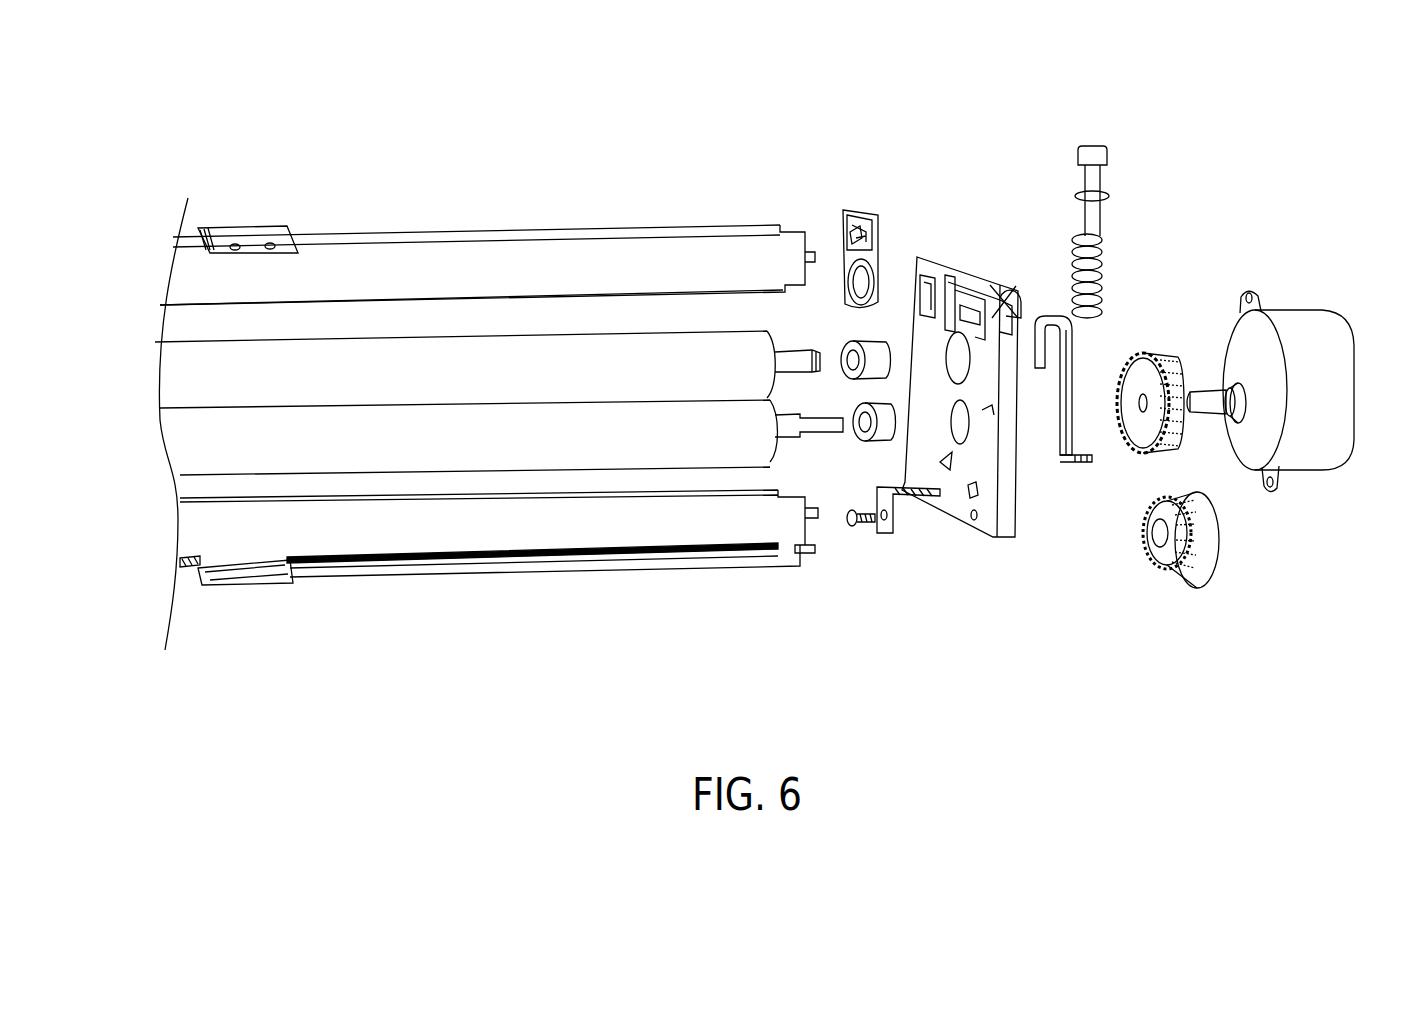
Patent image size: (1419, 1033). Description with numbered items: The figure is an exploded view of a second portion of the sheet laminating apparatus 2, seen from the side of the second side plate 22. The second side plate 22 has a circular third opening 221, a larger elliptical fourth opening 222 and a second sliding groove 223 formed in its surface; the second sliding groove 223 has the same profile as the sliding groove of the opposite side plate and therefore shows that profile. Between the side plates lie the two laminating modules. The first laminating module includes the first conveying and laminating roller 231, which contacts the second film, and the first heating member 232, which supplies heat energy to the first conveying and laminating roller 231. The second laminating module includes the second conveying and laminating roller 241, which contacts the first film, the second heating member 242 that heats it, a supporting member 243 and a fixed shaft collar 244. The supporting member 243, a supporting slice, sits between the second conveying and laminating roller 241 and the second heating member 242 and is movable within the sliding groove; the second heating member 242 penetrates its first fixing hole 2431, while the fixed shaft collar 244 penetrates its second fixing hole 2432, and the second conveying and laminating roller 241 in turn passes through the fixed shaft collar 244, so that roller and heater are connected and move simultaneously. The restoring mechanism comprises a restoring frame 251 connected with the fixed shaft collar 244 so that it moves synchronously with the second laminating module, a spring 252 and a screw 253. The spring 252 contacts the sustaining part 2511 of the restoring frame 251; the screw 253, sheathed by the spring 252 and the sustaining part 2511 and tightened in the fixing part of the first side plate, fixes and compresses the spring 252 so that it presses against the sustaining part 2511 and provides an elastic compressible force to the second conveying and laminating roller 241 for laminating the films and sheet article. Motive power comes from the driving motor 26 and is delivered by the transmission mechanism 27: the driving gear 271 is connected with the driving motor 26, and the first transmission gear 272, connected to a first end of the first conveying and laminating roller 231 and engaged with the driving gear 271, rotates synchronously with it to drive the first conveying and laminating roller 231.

The sheet laminating apparatus 2 is at (1306, 97).
The second side plate 22 is at (929, 275).
The third opening 221 is at (962, 440).
The fourth opening 222 is at (1014, 304).
The second sliding groove 223 is at (965, 292).
The first conveying and laminating roller 231 is at (478, 440).
The first heating member 232 is at (596, 530).
The second conveying and laminating roller 241 is at (495, 315).
The second heating member 242 is at (581, 256).
The supporting member 243 is at (870, 258).
The first fixing hole 2431 is at (847, 228).
The second fixing hole 2432 is at (845, 268).
The fixed shaft collar 244 is at (858, 345).
The restoring frame 251 is at (1052, 440).
The sustaining part 2511 is at (1082, 463).
The spring 252 is at (1105, 246).
The screw 253 is at (1109, 152).
The driving motor 26 is at (1322, 338).
The transmission mechanism 27 is at (1157, 482).
The driving gear 271 is at (1150, 352).
The first transmission gear 272 is at (1196, 566).